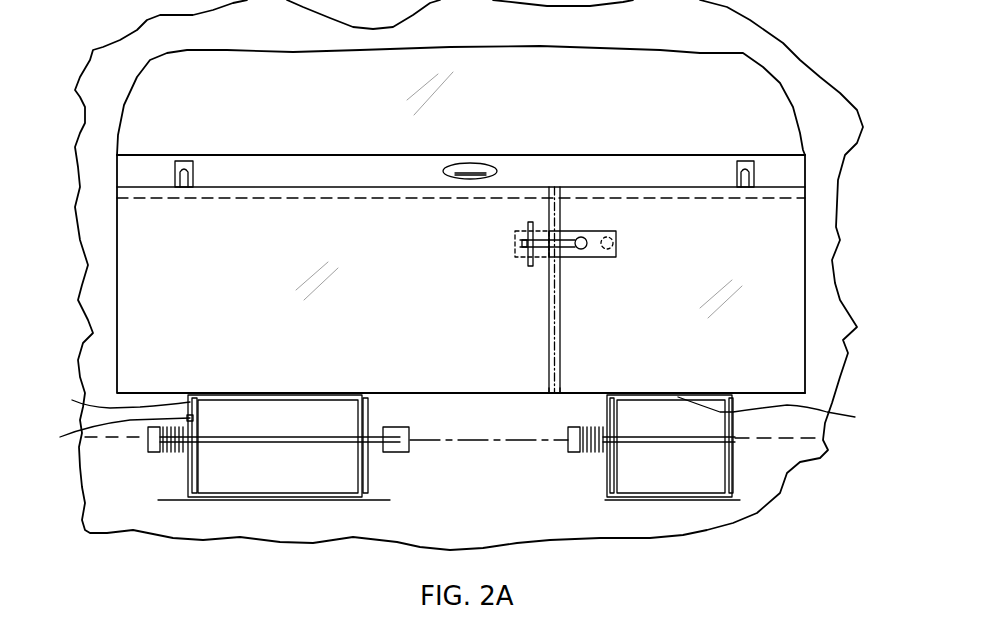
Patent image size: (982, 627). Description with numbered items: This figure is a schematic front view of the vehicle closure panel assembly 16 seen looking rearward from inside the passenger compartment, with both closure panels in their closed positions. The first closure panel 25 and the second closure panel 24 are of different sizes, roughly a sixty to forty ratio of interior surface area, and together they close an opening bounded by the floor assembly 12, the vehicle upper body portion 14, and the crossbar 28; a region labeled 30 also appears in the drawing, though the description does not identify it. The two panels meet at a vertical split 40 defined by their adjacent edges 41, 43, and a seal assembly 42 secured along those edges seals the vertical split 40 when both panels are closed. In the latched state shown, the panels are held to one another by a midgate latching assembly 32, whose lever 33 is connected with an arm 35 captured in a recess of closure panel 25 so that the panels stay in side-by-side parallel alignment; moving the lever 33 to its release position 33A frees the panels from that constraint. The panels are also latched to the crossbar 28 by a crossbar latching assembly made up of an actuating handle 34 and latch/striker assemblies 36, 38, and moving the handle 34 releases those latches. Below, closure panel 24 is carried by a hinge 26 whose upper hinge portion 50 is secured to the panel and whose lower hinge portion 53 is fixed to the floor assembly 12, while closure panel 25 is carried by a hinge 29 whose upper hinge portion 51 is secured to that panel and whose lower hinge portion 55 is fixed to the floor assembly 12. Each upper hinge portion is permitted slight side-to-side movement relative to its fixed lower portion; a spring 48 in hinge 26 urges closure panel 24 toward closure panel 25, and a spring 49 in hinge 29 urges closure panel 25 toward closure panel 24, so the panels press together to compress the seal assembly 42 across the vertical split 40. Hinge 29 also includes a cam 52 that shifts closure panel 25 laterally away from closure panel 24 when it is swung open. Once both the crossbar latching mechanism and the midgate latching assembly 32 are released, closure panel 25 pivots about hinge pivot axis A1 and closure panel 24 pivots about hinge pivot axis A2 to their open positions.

The floor assembly 12 is at (481, 535).
The vehicle upper body portion 14 is at (856, 149).
The vehicle closure panel assembly 16 is at (853, 207).
The second closure panel 24 is at (806, 262).
The first closure panel 25 is at (117, 330).
The hinge assembly 26 is at (743, 467).
The crossbar 28 is at (698, 170).
The hinge assembly 29 is at (406, 477).
The cavity 30 is at (368, 115).
The midgate latching assembly 32 is at (585, 226).
The lever 33 is at (578, 252).
The release position 33A is at (613, 240).
The actuating handle 34 is at (470, 164).
The arm 35 is at (513, 240).
The latch/striker assembly 36 is at (196, 163).
The latch/striker assembly 38 is at (755, 173).
The vertical split 40 is at (552, 396).
The edge 41 is at (547, 337).
The seal assembly 42 is at (553, 185).
The edge 43 is at (561, 337).
The spring 48 is at (593, 454).
The spring 49 is at (167, 456).
The upper hinge portion 50 is at (783, 415).
The upper hinge portion 51 is at (118, 400).
The cam 52 is at (112, 433).
The lower hinge portion 53 is at (618, 496).
The lower hinge portion 55 is at (200, 496).
The hinge pivot axis A1 is at (98, 440).
The hinge pivot axis A2 is at (795, 440).